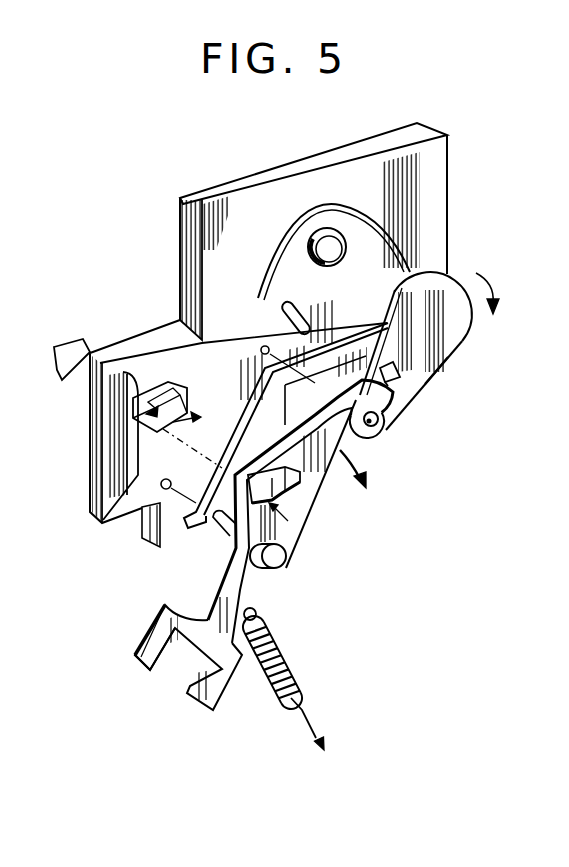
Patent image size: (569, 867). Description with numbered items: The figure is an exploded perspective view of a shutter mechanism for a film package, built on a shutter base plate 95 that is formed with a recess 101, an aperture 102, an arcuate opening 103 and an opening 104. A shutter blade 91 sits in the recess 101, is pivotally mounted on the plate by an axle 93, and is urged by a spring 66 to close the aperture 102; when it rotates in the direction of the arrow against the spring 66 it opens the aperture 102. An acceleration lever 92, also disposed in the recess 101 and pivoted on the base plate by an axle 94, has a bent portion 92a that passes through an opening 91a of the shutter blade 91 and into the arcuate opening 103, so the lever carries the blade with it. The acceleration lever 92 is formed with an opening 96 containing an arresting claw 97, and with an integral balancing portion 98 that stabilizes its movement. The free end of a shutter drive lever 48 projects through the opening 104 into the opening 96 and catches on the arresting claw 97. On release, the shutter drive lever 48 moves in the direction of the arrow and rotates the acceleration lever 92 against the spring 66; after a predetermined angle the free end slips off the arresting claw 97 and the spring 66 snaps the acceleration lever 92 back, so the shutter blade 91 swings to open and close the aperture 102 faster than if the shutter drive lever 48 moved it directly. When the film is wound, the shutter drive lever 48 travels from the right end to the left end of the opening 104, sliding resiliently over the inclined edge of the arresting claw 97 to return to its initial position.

The shutter base plate 95 is at (449, 180).
The aperture 102 is at (326, 228).
The recess 101 is at (390, 257).
The arcuate opening 103 is at (305, 314).
The opening 104 is at (153, 393).
The shutter drive lever 48 is at (72, 350).
The arresting claw 97 is at (272, 458).
The shutter blade 91 is at (463, 342).
The opening of the shutter blade 91a is at (438, 370).
The bent portion 92a is at (399, 389).
The axle 93 is at (373, 428).
The opening 96 is at (300, 486).
The acceleration lever 92 is at (300, 520).
The axle 94 is at (279, 562).
The balancing portion 98 is at (145, 668).
The spring 66 is at (300, 680).